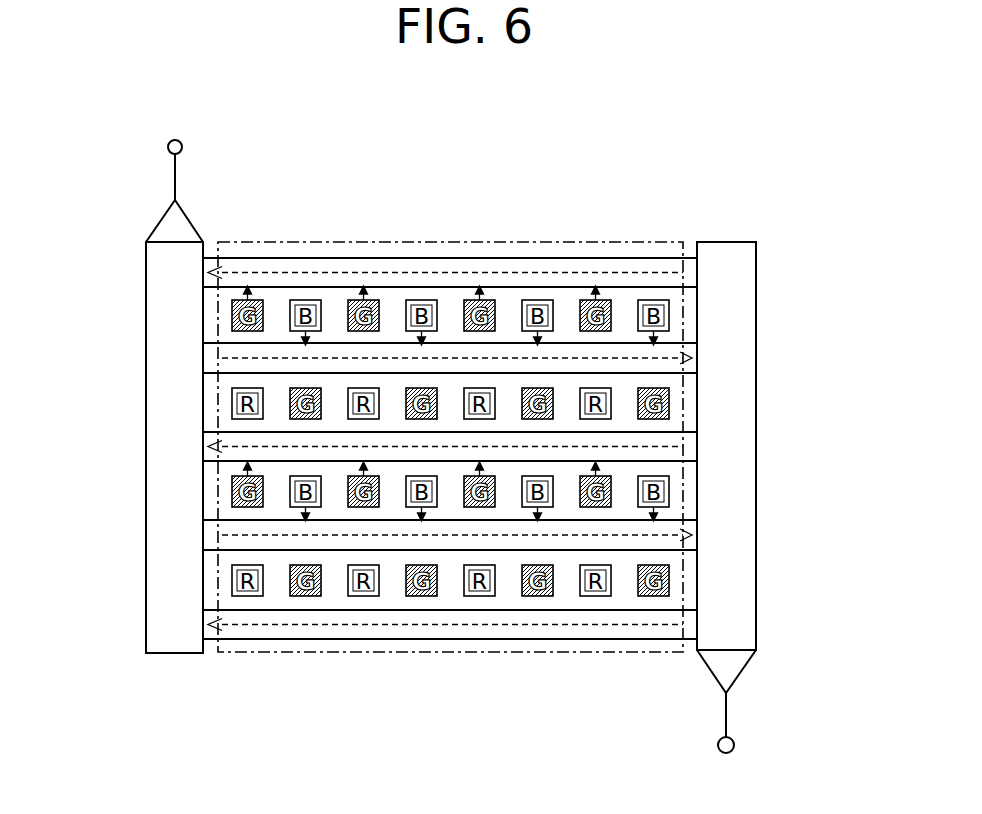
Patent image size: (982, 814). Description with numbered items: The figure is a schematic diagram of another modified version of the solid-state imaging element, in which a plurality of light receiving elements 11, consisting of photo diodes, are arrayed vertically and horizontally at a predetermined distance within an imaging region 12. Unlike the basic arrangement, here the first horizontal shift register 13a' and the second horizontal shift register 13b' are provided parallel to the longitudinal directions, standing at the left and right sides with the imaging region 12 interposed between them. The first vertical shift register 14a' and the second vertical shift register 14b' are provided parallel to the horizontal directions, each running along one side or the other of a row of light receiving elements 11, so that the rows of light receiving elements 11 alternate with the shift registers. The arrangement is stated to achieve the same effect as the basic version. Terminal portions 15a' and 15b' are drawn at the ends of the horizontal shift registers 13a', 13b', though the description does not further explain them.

The light receiving element 11 is at (553, 592).
The imaging region 12 is at (320, 655).
The first horizontal shift register 13a' is at (127, 447).
The second horizontal shift register 13b' is at (781, 446).
The first vertical shift register 14a' is at (450, 228).
The second vertical shift register 14b' is at (450, 271).
The first terminal 15a' is at (130, 186).
The second terminal 15b' is at (781, 715).